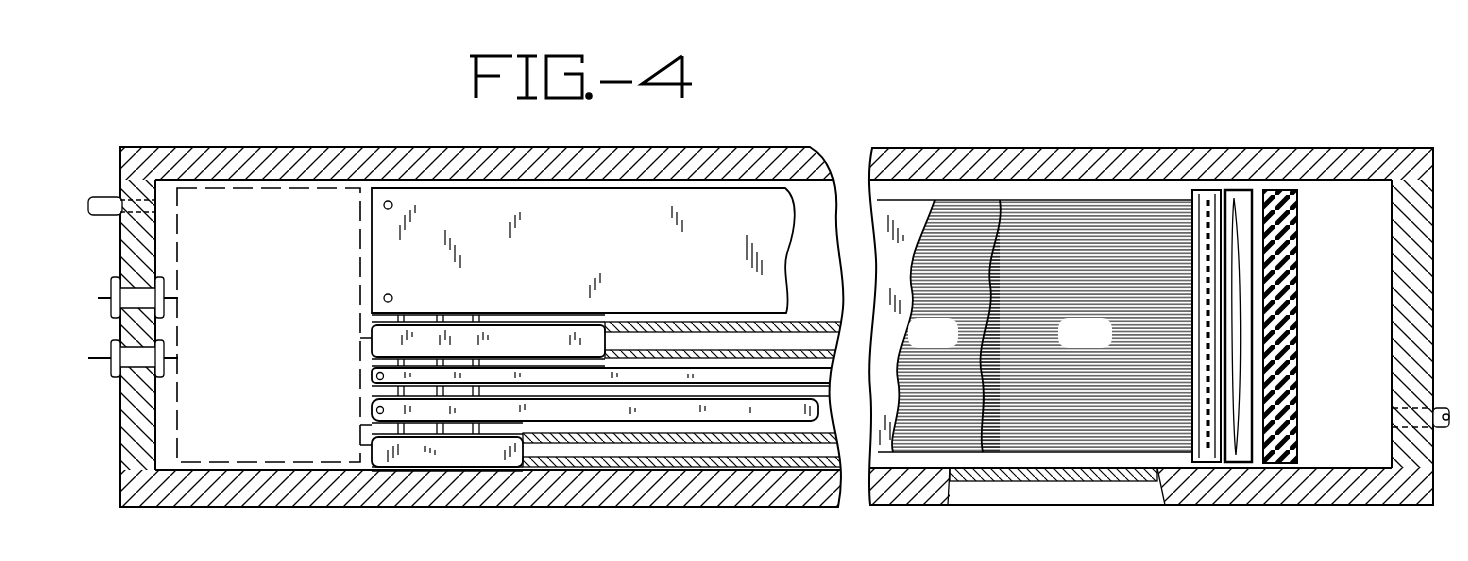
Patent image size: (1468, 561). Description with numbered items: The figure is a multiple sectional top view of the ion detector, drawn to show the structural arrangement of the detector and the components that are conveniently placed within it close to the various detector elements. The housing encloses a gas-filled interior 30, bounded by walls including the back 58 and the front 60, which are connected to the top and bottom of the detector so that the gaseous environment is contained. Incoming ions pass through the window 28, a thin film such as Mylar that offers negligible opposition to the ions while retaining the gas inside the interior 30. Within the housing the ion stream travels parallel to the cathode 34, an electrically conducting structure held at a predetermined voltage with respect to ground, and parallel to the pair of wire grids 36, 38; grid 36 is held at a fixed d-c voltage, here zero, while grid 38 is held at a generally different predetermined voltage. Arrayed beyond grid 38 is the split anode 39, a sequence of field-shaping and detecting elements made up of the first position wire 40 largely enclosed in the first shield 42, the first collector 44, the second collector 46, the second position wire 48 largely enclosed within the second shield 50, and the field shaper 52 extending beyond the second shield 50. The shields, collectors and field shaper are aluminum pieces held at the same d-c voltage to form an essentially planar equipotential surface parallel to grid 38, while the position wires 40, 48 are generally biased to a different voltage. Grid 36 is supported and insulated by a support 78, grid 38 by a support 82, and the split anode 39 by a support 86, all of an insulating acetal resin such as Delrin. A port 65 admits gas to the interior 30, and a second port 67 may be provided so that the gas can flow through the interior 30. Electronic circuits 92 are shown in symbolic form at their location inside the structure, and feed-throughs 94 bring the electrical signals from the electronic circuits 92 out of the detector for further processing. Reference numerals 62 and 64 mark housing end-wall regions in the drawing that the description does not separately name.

The window 28 is at (1097, 476).
The interior 30 is at (465, 327).
The cathode 34 is at (887, 455).
The wire grid 36 is at (950, 345).
The wire grid 38 is at (1102, 345).
The split anode 39 is at (457, 477).
The first position wire 40 is at (646, 445).
The first shield 42 is at (437, 458).
The first collector 44 is at (502, 411).
The second collector 46 is at (551, 343).
The second position wire 48 is at (702, 342).
The second shield 50 is at (498, 346).
The field shaper 52 is at (634, 251).
The back 58 is at (708, 163).
The front 60 is at (668, 487).
The end wall 62 is at (1408, 352).
The end wall 64 is at (133, 257).
The port 65 is at (105, 215).
The second port 67 is at (1390, 420).
The support 78 is at (1200, 195).
The support 82 is at (1248, 268).
The support 86 is at (1282, 302).
The electronic circuits 92 is at (288, 408).
The feed-throughs 94 is at (165, 346).